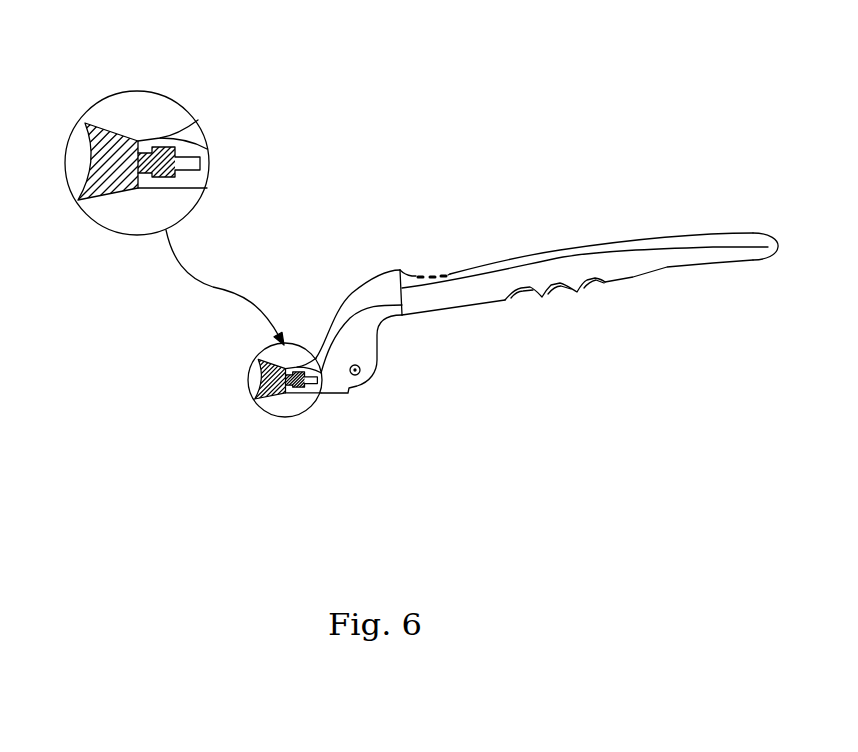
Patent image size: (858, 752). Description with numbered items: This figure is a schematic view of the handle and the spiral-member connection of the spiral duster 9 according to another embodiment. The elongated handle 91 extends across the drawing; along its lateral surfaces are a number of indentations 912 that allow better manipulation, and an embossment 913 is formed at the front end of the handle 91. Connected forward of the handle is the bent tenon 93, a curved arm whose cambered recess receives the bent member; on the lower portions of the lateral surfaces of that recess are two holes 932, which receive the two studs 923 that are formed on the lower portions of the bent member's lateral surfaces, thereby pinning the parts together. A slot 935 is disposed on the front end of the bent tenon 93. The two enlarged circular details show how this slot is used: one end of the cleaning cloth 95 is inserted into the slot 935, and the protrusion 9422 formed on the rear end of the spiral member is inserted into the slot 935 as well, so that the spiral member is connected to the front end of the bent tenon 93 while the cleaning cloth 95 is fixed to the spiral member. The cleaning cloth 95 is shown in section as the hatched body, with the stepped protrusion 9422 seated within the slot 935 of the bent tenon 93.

The spiral duster 9 is at (463, 108).
The handle 91 is at (660, 233).
The indentations 912 is at (563, 293).
The embossment 913 is at (430, 275).
The bent tenon 93 is at (360, 287).
The studs 923 is at (362, 370).
The holes 932 is at (357, 377).
The cleaning cloth 95 is at (110, 192).
The slot 935 is at (200, 165).
The protrusion 9422 is at (155, 150).